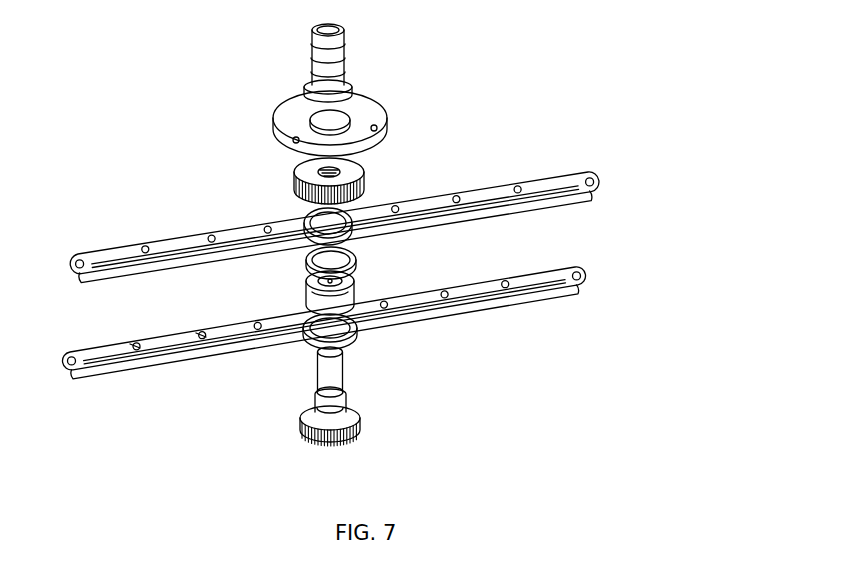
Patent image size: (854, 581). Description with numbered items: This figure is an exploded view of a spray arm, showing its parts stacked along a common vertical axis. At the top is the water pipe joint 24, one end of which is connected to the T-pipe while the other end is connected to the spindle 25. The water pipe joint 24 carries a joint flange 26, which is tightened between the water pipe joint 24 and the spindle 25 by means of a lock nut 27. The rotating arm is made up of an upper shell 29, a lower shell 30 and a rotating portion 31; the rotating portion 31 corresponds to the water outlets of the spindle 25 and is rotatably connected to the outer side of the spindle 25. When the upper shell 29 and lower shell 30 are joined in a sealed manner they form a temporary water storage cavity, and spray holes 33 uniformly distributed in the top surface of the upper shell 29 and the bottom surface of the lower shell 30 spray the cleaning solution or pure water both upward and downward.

The water pipe joint 24 is at (349, 44).
The spindle 25 is at (318, 388).
The joint flange 26 is at (286, 122).
The lock nut 27 is at (358, 172).
The upper shell 29 is at (552, 187).
The lower shell 30 is at (520, 303).
The rotating portion 31 is at (356, 283).
The spray holes 33 is at (592, 177).